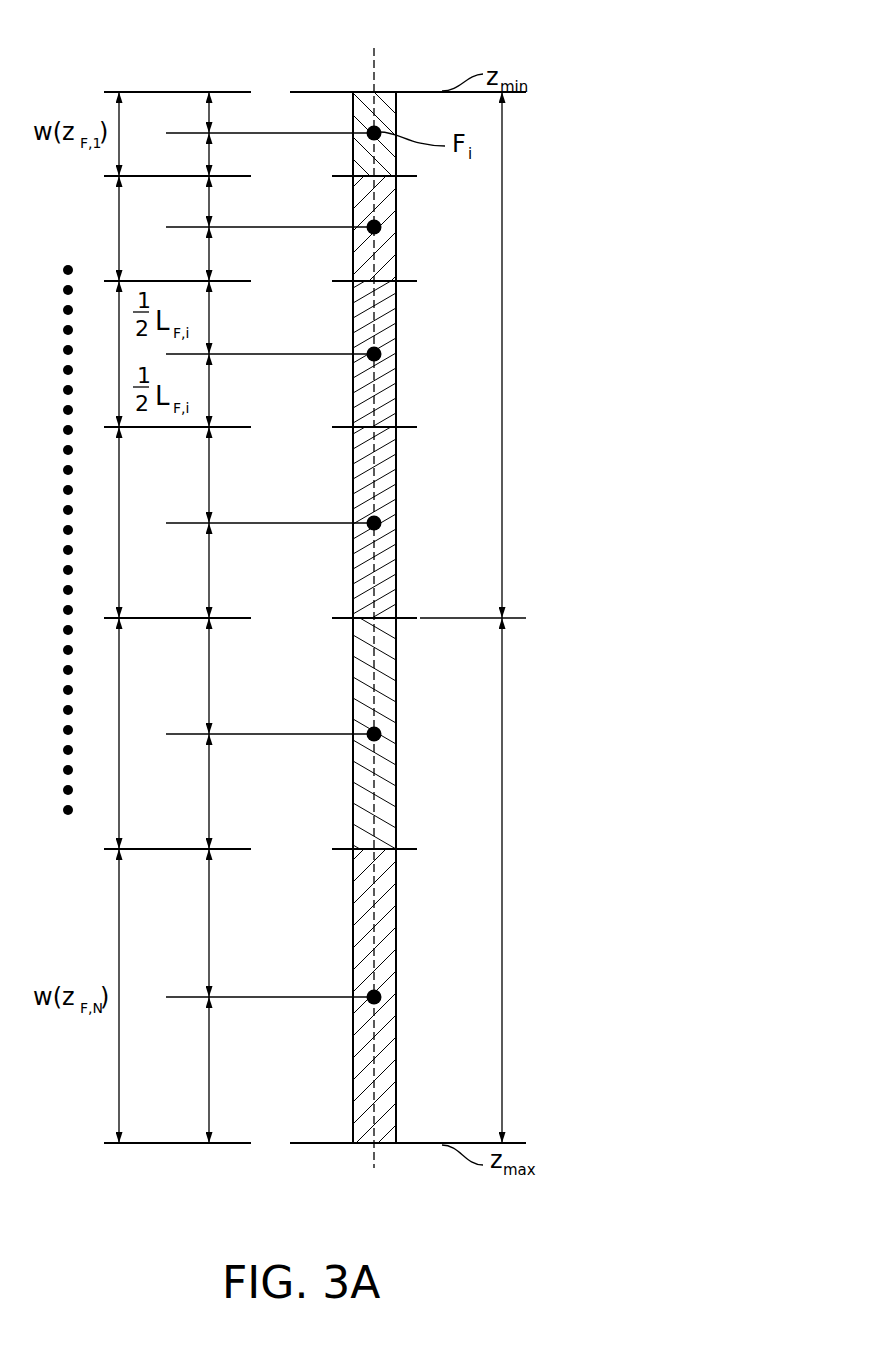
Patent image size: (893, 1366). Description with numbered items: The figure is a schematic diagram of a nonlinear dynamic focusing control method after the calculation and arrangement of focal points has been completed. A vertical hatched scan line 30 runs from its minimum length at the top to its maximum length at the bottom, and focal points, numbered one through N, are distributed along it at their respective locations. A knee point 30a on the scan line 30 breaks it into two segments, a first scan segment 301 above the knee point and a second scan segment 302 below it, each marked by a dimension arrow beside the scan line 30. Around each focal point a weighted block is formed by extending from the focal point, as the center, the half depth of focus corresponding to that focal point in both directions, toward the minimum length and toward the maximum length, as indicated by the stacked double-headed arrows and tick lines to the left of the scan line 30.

The scan line 30 is at (373, 68).
The knee point 30a is at (375, 617).
The first scan segment 301 is at (529, 355).
The second scan segment 302 is at (529, 880).